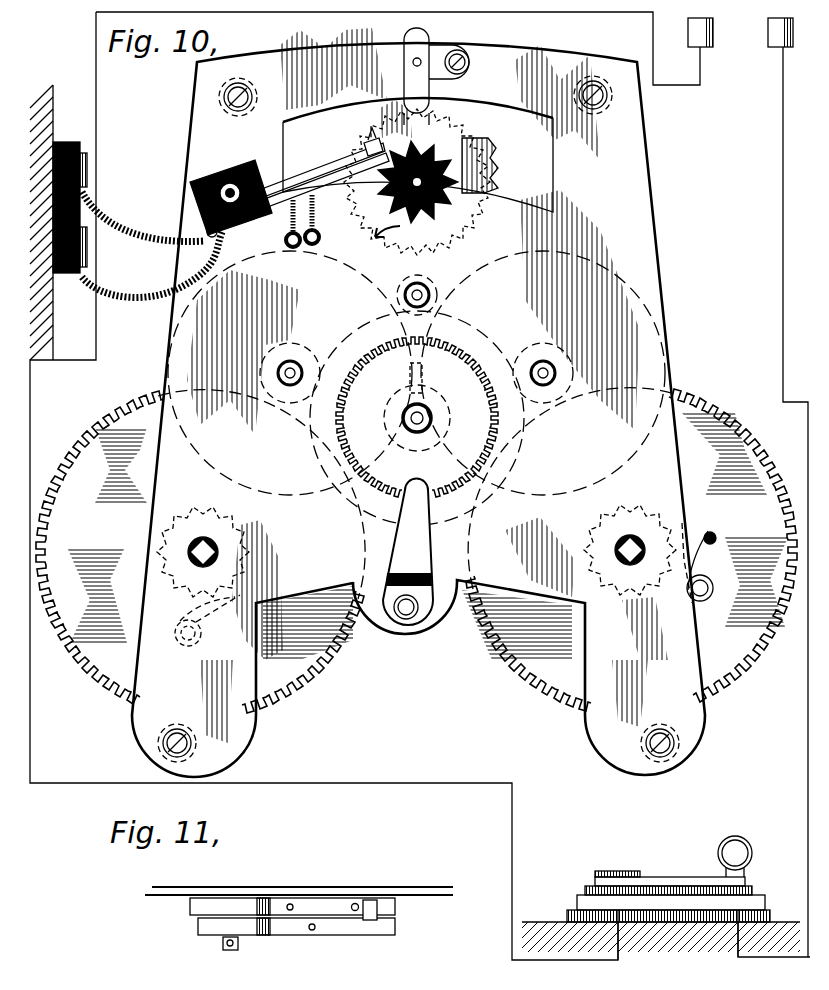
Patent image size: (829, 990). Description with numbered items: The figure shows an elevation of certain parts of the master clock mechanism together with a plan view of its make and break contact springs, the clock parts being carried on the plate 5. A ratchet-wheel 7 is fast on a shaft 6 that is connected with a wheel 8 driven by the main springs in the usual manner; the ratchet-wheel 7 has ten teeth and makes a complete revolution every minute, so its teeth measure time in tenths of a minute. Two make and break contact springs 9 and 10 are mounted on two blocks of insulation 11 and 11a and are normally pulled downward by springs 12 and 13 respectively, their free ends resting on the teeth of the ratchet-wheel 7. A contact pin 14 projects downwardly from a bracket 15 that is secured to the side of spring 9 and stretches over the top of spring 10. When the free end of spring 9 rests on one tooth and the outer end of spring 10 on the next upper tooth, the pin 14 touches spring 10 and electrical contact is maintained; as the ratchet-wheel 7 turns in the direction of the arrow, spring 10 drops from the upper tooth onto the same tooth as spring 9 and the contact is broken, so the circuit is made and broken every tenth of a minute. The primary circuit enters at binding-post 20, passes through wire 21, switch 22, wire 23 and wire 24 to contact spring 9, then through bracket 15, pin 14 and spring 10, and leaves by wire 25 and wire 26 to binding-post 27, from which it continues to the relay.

In FIG. 10, the main plate 5 is at (638, 208).
In FIG. 10, the shaft 6 is at (417, 182).
In FIG. 10, the ratchet-wheel 7 is at (417, 182).
In FIG. 10, the wheel 8 is at (492, 167).
In FIG. 10, the contact spring 9 is at (262, 214).
In FIG. 11, the contact spring 9 is at (337, 923).
In FIG. 10, the contact spring 10 is at (295, 180).
In FIG. 11, the contact spring 10 is at (322, 897).
In FIG. 10, the block of insulation 11 is at (225, 236).
In FIG. 10, the block of insulation 11a is at (233, 170).
In FIG. 10, the spring 12 is at (323, 215).
In FIG. 10, the spring 13 is at (278, 226).
In FIG. 10, the contact pin 14 is at (352, 153).
In FIG. 11, the contact pin 14 is at (357, 904).
In FIG. 10, the bracket 15 is at (370, 140).
In FIG. 11, the bracket 15 is at (374, 902).
In FIG. 10, the binding-post 20 is at (768, 48).
In FIG. 10, the wire 21 is at (782, 278).
In FIG. 10, the switch 22 is at (675, 880).
In FIG. 10, the wire 23 is at (97, 343).
In FIG. 10, the wire 24 is at (127, 290).
In FIG. 10, the wire 25 is at (138, 233).
In FIG. 10, the wire 26 is at (232, 57).
In FIG. 10, the binding-post 27 is at (713, 32).